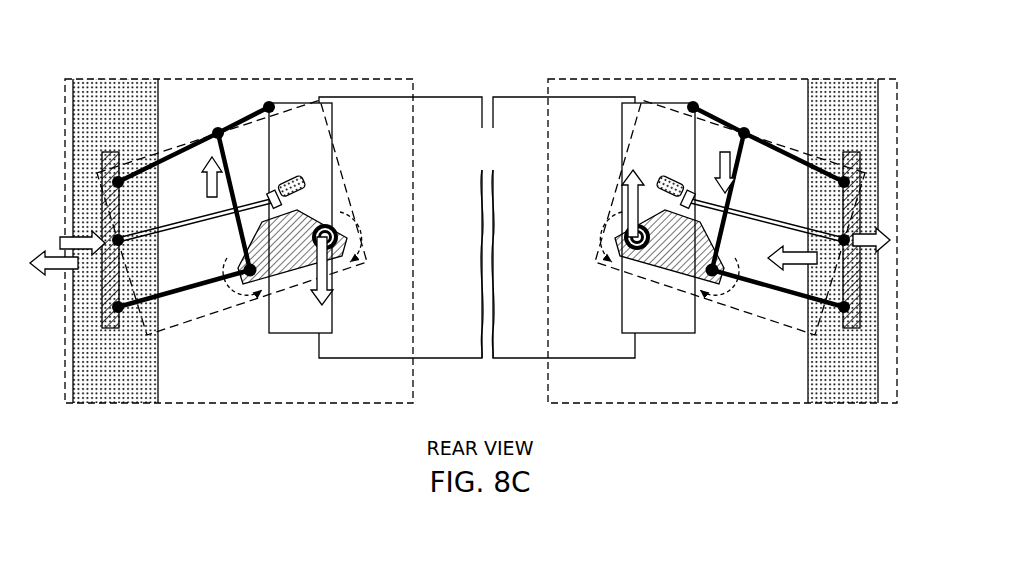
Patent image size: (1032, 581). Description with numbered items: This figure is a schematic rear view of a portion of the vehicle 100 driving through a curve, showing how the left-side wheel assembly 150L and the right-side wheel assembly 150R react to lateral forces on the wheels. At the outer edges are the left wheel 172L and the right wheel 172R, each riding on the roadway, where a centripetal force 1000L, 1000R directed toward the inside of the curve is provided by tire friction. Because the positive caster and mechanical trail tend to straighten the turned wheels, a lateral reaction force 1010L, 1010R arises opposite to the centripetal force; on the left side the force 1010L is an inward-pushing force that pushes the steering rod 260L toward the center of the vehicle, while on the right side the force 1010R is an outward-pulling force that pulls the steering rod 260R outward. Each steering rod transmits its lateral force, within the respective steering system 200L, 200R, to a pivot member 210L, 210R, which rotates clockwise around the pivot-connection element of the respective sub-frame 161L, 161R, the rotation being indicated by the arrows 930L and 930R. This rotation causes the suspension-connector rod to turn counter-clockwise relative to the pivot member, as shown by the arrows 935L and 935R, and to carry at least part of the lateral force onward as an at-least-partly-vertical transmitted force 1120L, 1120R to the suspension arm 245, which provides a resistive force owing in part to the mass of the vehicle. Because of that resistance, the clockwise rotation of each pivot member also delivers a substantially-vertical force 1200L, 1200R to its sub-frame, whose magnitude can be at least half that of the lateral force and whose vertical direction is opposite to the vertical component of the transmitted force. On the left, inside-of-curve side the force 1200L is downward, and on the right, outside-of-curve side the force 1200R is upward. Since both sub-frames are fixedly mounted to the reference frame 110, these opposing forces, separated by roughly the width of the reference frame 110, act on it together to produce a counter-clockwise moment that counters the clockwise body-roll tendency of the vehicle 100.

The vehicle 100 is at (472, 216).
The reference frame 110 is at (503, 159).
The left-side wheel assembly 150L is at (239, 249).
The right-side wheel assembly 150R is at (722, 249).
The left-side sub-frame 161L is at (318, 154).
The right-side sub-frame 161R is at (680, 137).
The left wheel 172L is at (112, 93).
The right wheel 172R is at (830, 93).
The left steering system 200L is at (178, 330).
The right steering system 200R is at (788, 142).
The left pivot member 210L is at (297, 276).
The right pivot member 210R is at (666, 273).
The suspension arm 245 is at (231, 123).
The left steering rod 260L is at (221, 224).
The right steering rod 260R is at (758, 213).
The left pivot member rotation arrow 930L is at (353, 234).
The right pivot member rotation arrow 930R is at (603, 262).
The left suspension-connector rod rotation arrow 935L is at (242, 292).
The right suspension-connector rod rotation arrow 935R is at (732, 292).
The left centripetal force 1000L is at (51, 280).
The right centripetal force 1000R is at (796, 272).
The left lateral force 1010L is at (56, 233).
The right lateral force 1010R is at (880, 234).
The left transmitted force 1120L is at (205, 168).
The right transmitted force 1120R is at (733, 117).
The left substantially-vertical force 1200L is at (334, 280).
The right substantially-vertical force 1200R is at (613, 215).